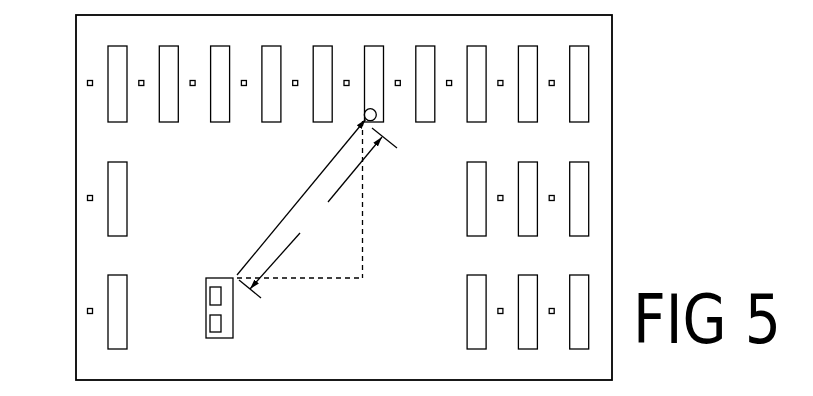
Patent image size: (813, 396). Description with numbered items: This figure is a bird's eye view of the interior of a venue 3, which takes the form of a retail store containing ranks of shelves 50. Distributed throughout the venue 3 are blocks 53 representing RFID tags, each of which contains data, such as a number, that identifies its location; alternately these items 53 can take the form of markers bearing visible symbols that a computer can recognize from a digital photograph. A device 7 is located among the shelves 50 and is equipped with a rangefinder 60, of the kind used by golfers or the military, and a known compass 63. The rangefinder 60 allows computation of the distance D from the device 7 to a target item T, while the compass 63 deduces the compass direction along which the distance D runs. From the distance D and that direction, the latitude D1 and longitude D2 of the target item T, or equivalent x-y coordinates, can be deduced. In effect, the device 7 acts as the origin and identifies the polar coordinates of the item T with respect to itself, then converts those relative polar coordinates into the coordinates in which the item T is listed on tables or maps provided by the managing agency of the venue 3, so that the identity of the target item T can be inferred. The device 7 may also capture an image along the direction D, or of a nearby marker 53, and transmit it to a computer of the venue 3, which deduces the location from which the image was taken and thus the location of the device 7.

The venue 3 is at (616, 41).
The shelves 50 is at (590, 283).
The RFID tags 53 is at (87, 101).
The device 7 is at (235, 310).
The rangefinder 60 is at (208, 296).
The compass 63 is at (208, 323).
The target item T is at (371, 108).
The distance D is at (317, 209).
The latitude D1 is at (319, 289).
The longitude D2 is at (371, 213).